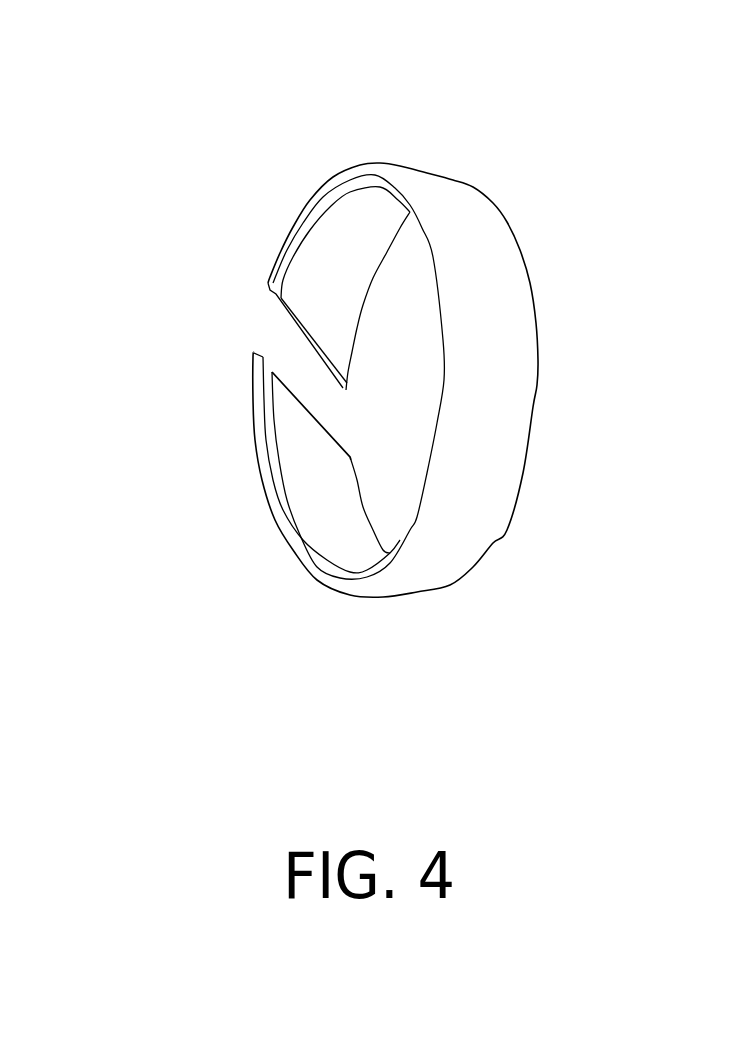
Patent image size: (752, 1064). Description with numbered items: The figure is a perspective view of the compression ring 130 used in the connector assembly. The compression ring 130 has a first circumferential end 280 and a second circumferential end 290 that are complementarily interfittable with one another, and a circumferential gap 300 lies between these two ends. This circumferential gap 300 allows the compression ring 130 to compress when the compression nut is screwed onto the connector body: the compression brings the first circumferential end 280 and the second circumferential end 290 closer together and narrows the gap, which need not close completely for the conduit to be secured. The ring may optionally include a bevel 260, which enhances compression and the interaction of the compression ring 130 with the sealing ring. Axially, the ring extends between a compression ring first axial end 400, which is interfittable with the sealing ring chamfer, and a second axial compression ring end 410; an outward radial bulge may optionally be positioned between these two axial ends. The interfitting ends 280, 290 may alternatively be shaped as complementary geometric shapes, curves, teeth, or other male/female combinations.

The compression ring 130 is at (290, 112).
The bevel 260 is at (290, 267).
The first circumferential end 280 is at (290, 323).
The second circumferential end 290 is at (300, 405).
The circumferential gap 300 is at (290, 353).
The compression ring first axial end 400 is at (495, 545).
The second axial compression ring end 410 is at (413, 522).